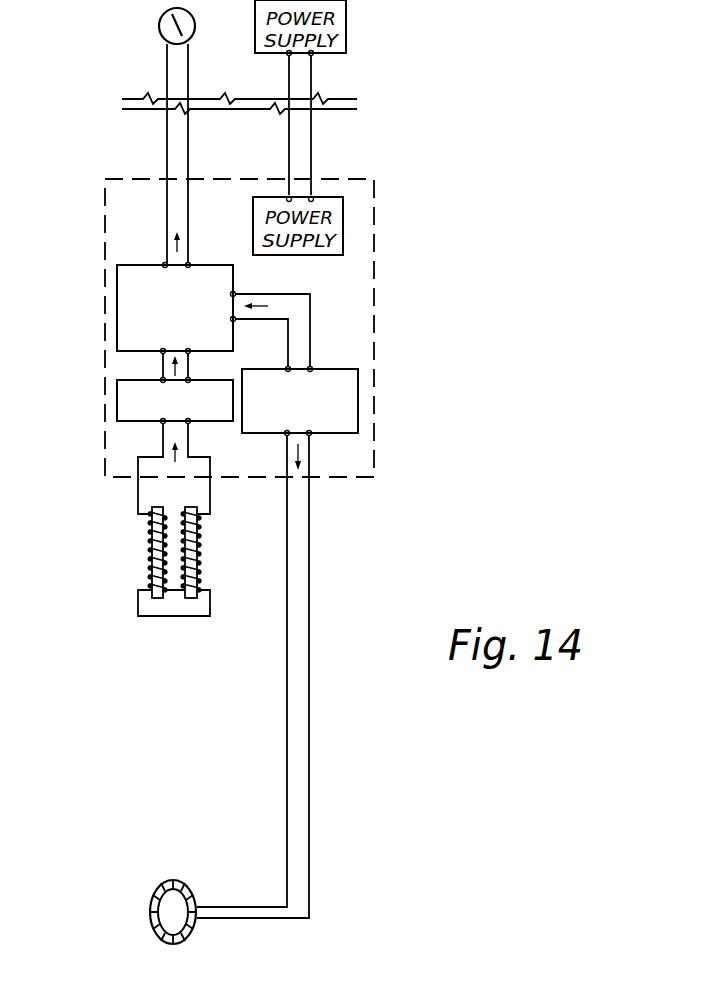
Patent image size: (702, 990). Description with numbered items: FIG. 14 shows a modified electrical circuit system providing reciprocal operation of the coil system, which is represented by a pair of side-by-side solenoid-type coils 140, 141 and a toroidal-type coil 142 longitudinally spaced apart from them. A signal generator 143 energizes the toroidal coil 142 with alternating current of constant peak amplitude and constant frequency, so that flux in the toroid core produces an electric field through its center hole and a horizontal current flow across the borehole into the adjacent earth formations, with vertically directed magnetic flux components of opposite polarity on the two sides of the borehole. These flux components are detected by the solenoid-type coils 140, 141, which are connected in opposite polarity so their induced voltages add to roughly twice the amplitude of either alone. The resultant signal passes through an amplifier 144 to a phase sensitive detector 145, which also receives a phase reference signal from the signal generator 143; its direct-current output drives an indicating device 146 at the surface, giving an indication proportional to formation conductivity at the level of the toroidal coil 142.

The solenoid-type coil 140 is at (150, 549).
The solenoid-type coil 141 is at (199, 545).
The toroidal-type coil 142 is at (150, 895).
The signal generator 143 is at (345, 369).
The amplifier 144 is at (117, 383).
The phase sensitive detector 145 is at (117, 263).
The indicating device 146 is at (158, 25).